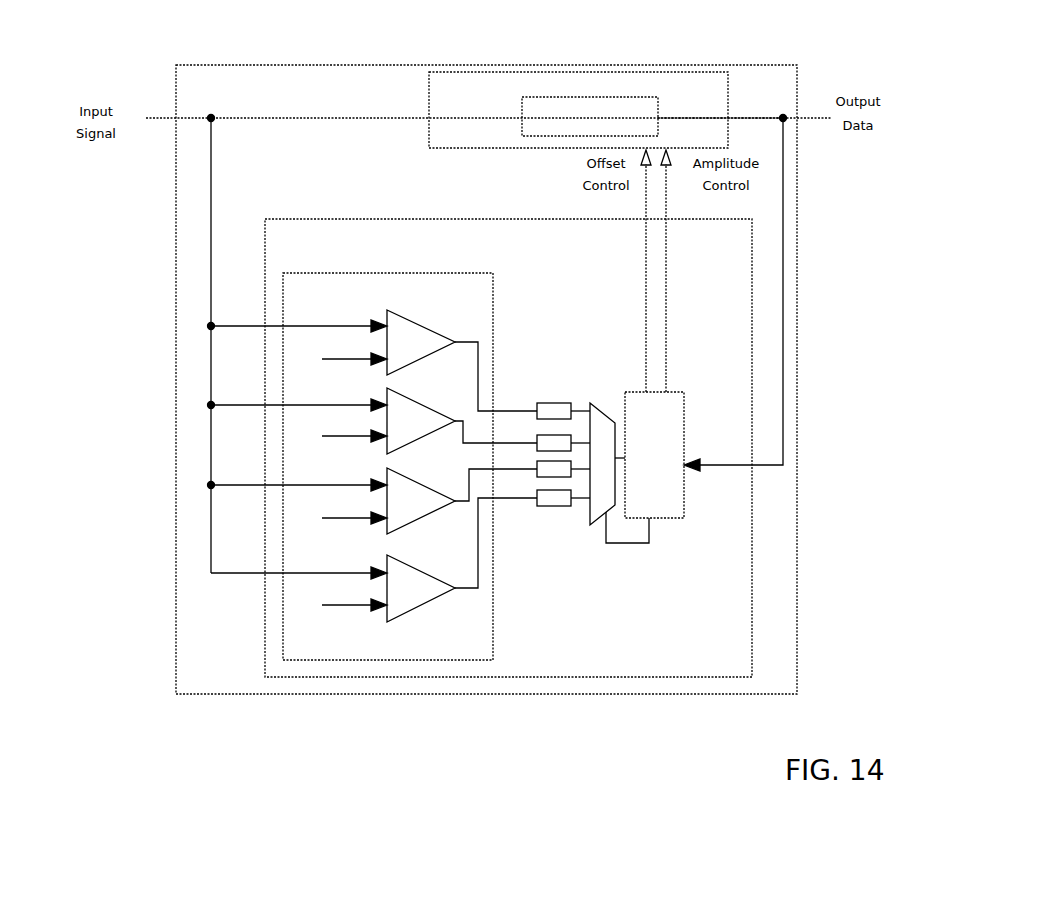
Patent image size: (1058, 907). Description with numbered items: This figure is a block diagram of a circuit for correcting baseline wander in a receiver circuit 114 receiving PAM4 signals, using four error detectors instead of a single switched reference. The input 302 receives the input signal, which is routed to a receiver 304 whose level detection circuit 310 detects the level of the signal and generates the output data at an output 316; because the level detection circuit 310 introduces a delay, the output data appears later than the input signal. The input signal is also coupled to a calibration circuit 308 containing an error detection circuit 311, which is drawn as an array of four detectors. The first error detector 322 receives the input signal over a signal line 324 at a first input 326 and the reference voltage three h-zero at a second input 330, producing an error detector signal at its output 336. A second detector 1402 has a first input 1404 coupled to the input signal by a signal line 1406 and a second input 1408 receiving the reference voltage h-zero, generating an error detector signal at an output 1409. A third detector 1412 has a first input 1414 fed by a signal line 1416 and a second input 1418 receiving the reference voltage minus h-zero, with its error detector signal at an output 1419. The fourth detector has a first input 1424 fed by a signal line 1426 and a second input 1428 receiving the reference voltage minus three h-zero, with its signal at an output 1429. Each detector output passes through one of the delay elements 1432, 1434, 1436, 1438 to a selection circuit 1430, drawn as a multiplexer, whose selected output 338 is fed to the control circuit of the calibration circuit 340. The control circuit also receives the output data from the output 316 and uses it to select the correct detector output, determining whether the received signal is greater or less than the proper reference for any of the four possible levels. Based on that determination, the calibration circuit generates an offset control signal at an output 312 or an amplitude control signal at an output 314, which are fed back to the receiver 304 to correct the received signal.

The receiver circuit 114 is at (797, 82).
The input 302 is at (175, 118).
The receiver 304 is at (700, 72).
The calibration circuit 308 is at (712, 219).
The level detection circuit 310 is at (522, 104).
The error detection circuit 311 is at (460, 258).
The output 312 is at (646, 222).
The output 314 is at (666, 222).
The output 316 is at (730, 120).
The error detector 322 is at (404, 316).
The signal line 324 is at (252, 308).
The first input 326 is at (378, 326).
The second input 330 is at (384, 364).
The first amplifier output 336 is at (478, 322).
The multiplexer output 338 is at (626, 464).
The calibration circuit 340 is at (686, 418).
The second detector 1402 is at (400, 398).
The first input 1404 is at (380, 404).
The signal line 1406 is at (252, 388).
The second input 1408 is at (384, 438).
The output 1409 is at (466, 402).
The third detector 1412 is at (414, 522).
The first input 1414 is at (382, 482).
The signal line 1416 is at (252, 467).
The second input 1418 is at (384, 521).
The output 1419 is at (454, 502).
The first input 1424 is at (382, 570).
The signal line 1426 is at (252, 553).
The second input 1428 is at (384, 608).
The output 1429 is at (454, 588).
The selection circuit 1430 is at (604, 406).
The delay element 1432 is at (554, 408).
The delay element 1434 is at (554, 440).
The delay element 1436 is at (554, 468).
The delay element 1438 is at (554, 496).